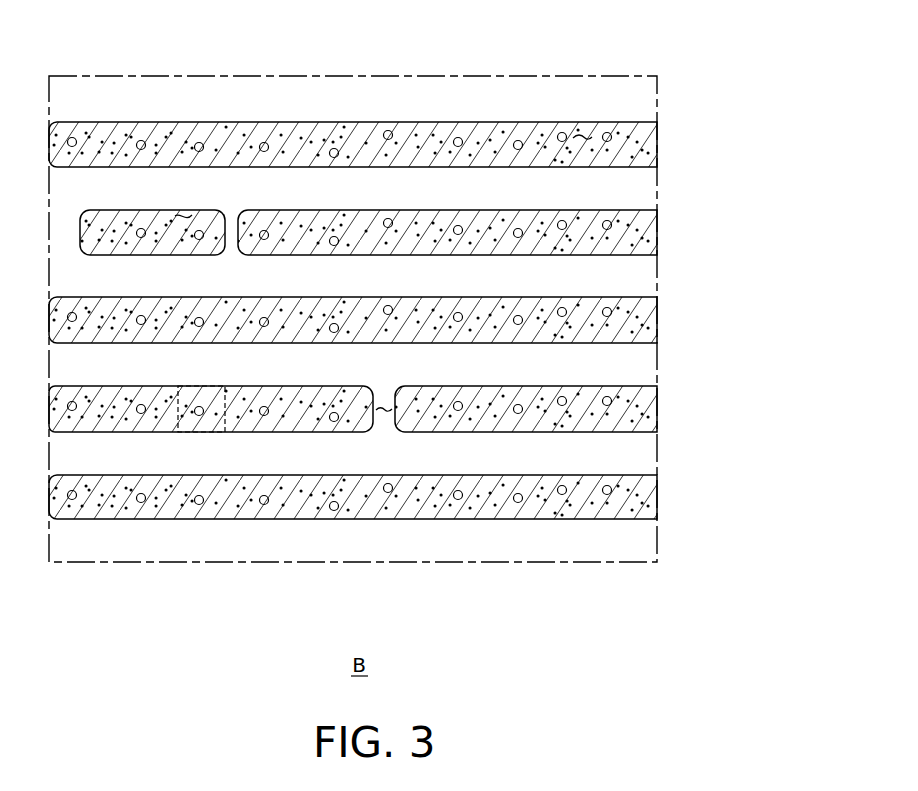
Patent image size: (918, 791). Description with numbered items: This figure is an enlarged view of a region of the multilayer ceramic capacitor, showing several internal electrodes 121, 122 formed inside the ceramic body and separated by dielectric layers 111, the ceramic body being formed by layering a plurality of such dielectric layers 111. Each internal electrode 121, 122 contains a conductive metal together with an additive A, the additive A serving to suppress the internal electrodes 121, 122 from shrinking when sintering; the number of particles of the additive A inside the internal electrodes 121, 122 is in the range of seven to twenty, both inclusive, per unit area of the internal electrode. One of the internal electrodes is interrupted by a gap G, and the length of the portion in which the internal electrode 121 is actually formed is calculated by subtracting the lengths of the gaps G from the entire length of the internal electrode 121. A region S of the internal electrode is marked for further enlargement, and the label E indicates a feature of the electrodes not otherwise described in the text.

The dielectric layer 111 is at (652, 368).
The internal electrode 121 is at (652, 325).
The internal electrode 122 is at (652, 228).
The additive A is at (141, 226).
The electrode E is at (192, 215).
The region S is at (213, 433).
The gap G is at (378, 412).